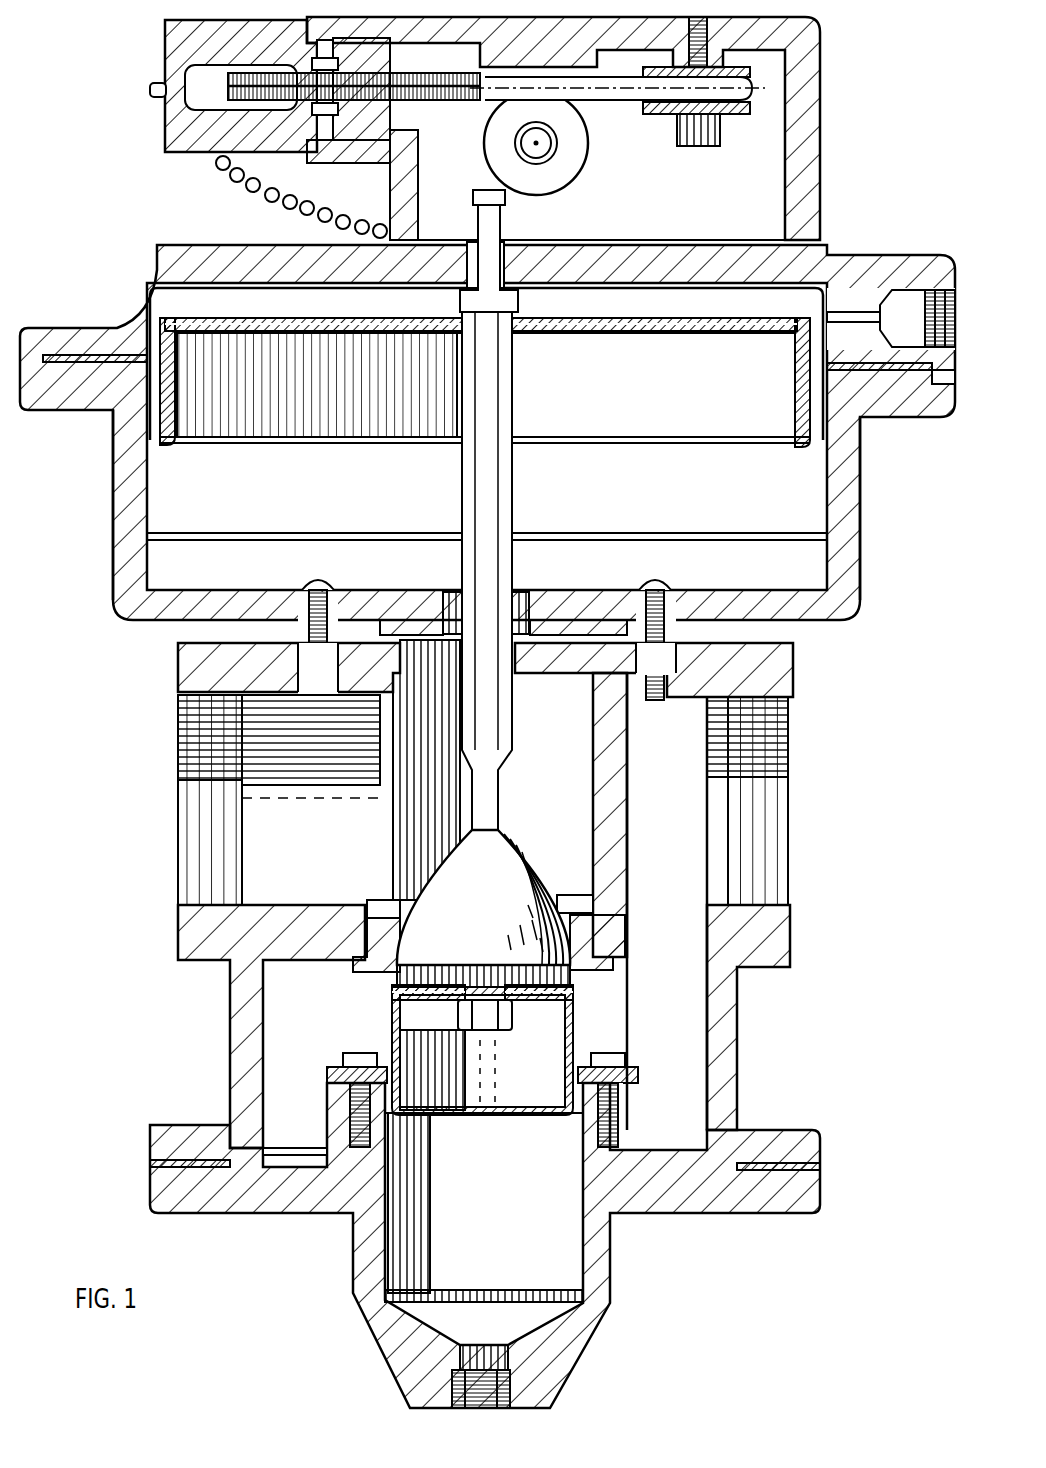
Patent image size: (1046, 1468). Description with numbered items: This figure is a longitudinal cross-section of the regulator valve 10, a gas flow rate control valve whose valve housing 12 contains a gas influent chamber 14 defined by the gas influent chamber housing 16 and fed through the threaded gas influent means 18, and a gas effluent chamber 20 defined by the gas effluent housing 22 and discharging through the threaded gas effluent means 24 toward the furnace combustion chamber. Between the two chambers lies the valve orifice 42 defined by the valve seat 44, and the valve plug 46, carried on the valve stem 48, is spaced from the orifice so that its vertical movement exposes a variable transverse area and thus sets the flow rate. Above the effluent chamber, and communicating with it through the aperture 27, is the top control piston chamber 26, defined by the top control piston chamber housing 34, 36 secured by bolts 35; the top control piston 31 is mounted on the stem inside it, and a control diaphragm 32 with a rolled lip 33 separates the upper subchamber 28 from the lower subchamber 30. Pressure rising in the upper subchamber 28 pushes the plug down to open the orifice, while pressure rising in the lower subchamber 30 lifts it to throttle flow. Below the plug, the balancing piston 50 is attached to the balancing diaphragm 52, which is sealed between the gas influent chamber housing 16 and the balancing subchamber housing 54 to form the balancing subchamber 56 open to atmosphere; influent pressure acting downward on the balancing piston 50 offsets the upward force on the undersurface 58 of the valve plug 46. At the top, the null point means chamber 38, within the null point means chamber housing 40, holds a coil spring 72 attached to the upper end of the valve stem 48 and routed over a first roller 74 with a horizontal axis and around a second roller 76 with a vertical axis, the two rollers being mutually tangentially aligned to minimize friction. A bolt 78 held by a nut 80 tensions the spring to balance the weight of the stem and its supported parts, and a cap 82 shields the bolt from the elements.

The regulator valve 10 is at (717, 1252).
The valve housing 12 is at (797, 668).
The gas influent chamber 14 is at (664, 994).
The gas influent chamber housing 16 is at (770, 940).
The threaded gas influent means 18 is at (772, 870).
The gas effluent chamber 20 is at (304, 846).
The gas effluent housing 22 is at (190, 670).
The threaded gas effluent means 24 is at (190, 860).
The top control piston chamber 26 is at (552, 489).
The aperture 27 is at (440, 585).
The upper subchamber 28 is at (803, 292).
The lower subchamber 30 is at (810, 517).
The top control piston 31 is at (578, 345).
The control diaphragm 32 is at (698, 345).
The rolled lip 33 is at (160, 440).
The top control piston chamber housing 34 is at (122, 466).
The bolts 35 is at (310, 580).
The top control piston chamber housing 36 is at (118, 312).
The null point means chamber 38 is at (708, 201).
The null point means chamber housing 40 is at (805, 178).
The valve orifice 42 is at (590, 910).
The valve seat 44 is at (595, 948).
The valve plug 46 is at (486, 898).
The valve stem 48 is at (490, 500).
The balancing piston 50 is at (560, 1085).
The balancing diaphragm 52 is at (575, 1025).
The balancing subchamber housing 54 is at (612, 1180).
The balancing subchamber 56 is at (504, 1238).
The undersurface 58 is at (400, 978).
The coil spring 72 is at (620, 95).
The first roller 74 is at (563, 173).
The second roller 76 is at (667, 122).
The bolt 78 is at (403, 85).
The nut 80 is at (318, 150).
The cap 82 is at (190, 37).